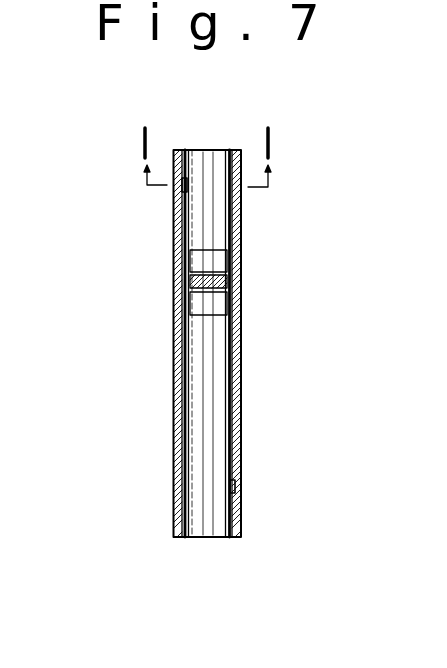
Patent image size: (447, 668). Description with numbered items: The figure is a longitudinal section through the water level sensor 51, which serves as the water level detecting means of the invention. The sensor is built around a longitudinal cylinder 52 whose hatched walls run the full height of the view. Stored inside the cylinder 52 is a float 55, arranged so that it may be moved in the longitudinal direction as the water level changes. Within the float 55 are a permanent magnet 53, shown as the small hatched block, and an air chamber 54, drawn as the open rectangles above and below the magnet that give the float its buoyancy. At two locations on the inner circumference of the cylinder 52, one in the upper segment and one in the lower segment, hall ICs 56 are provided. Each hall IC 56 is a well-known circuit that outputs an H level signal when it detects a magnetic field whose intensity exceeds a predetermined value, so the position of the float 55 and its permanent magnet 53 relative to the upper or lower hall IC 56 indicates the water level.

The water level sensor 51 is at (231, 302).
The longitudinal cylinder 52 is at (278, 372).
The permanent magnet 53 is at (278, 260).
The air chamber 54 is at (205, 305).
The float 55 is at (178, 272).
The hall IC 56 is at (246, 285).